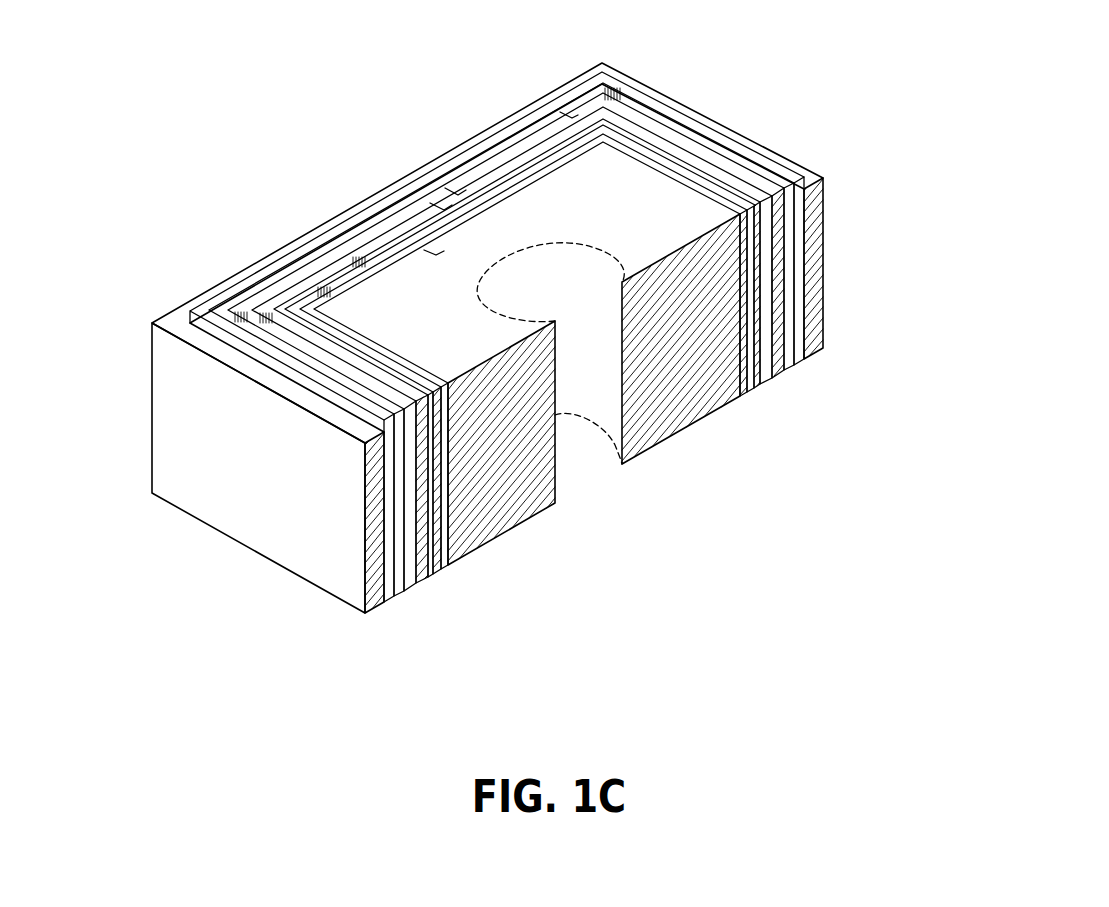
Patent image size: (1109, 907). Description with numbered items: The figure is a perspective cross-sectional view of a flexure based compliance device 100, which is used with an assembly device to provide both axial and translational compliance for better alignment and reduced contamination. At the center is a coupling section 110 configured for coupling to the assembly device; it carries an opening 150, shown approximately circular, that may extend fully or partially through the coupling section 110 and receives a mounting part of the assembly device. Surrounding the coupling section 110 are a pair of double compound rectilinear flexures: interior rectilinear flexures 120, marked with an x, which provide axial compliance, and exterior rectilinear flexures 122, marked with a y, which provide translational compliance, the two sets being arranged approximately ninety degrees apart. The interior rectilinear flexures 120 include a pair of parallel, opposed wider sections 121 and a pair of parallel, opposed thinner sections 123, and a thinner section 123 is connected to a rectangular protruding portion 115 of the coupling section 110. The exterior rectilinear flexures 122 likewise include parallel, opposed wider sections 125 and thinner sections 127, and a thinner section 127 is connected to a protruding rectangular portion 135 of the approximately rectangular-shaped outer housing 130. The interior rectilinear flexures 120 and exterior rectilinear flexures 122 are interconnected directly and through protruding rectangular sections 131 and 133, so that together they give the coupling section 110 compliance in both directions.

The flexure based compliance device 100 is at (326, 38).
The coupling section 110 is at (632, 231).
The rectangular protruding portion 115 is at (430, 252).
The interior rectilinear flexure 120 is at (379, 270).
The wider section 121 is at (723, 196).
The exterior rectilinear flexure 122 is at (440, 635).
The thinner section 123 is at (553, 166).
The wider section 125 is at (557, 112).
The thinner section 127 is at (653, 122).
The outer housing 130 is at (192, 439).
The protruding rectangular section 131 is at (707, 172).
The protruding rectangular section 133 is at (462, 182).
The protruding rectangular portion 135 is at (730, 186).
The opening 150 is at (440, 203).